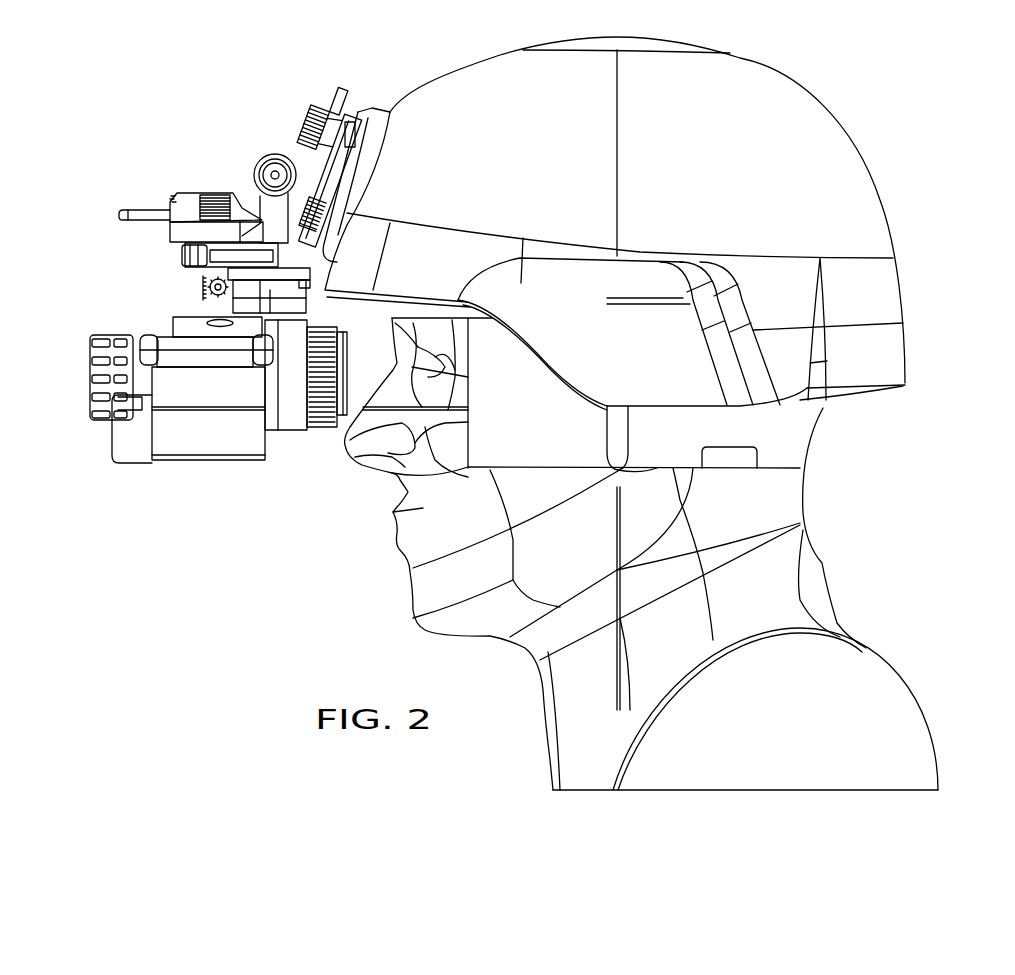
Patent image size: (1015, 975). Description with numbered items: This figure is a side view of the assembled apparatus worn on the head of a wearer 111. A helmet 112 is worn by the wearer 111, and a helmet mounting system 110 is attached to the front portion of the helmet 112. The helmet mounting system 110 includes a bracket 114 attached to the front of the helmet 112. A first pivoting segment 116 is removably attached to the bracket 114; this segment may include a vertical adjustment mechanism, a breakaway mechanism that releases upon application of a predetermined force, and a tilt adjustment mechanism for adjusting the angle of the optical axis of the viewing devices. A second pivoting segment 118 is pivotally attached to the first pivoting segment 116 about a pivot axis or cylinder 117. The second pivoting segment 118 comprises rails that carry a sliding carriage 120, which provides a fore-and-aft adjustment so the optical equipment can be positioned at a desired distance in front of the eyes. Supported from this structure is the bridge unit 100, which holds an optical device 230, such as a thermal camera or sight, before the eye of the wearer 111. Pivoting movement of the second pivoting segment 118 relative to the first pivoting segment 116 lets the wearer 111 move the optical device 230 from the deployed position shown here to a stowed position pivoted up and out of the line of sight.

The bridge unit 100 is at (168, 268).
The helmet mounting system 110 is at (188, 189).
The wearer 111 is at (820, 562).
The helmet 112 is at (615, 256).
The bracket 114 is at (388, 122).
The first pivoting segment 116 is at (322, 105).
The pivot axis or cylinder 117 is at (273, 175).
The second pivoting segment 118 is at (122, 210).
The sliding carriage 120 is at (185, 195).
The optical device 230 is at (140, 463).